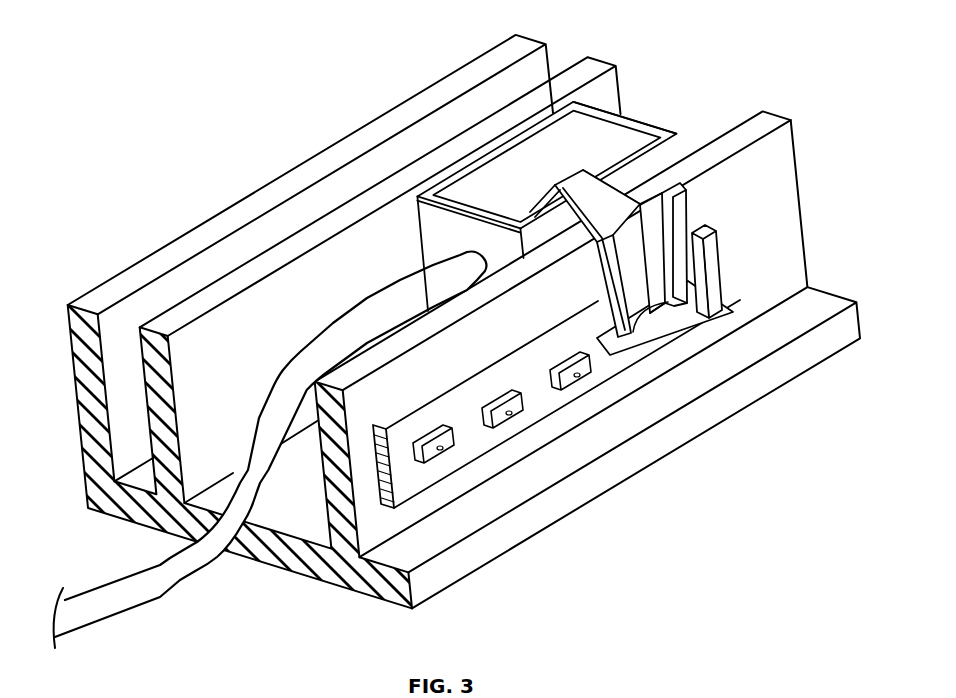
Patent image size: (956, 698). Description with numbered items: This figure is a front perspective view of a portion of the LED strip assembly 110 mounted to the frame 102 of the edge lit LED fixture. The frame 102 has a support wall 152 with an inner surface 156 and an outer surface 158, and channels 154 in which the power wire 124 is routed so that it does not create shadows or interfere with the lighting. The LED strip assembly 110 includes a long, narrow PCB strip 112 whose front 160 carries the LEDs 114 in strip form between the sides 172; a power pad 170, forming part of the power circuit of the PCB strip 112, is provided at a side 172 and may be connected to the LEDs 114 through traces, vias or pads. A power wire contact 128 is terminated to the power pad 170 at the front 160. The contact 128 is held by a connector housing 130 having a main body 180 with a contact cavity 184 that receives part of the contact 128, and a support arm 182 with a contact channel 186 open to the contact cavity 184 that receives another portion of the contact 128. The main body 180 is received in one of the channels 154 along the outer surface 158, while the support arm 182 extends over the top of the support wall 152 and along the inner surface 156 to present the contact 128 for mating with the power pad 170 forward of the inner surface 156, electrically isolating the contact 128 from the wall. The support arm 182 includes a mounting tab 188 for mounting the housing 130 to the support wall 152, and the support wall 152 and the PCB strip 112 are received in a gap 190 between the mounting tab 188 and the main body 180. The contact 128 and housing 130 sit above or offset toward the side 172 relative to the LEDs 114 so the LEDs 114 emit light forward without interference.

The frame 102 is at (460, 325).
The support wall 152 is at (451, 325).
The channel 154 is at (358, 250).
The inner surface 156 is at (778, 187).
The outer surface 158 is at (727, 135).
The power wire 124 is at (183, 578).
The front 160 is at (556, 469).
The LEDs 114 is at (578, 378).
The main body 180 is at (547, 132).
The connector housing 130 is at (555, 114).
The power wire contact 128 is at (543, 163).
The contact cavity 184 is at (580, 120).
The support arm 182 is at (677, 138).
The contact channel 186 is at (636, 178).
The mounting tab 188 is at (607, 352).
The gap 190 is at (592, 248).
The power pad 170 is at (627, 343).
The side 172 is at (722, 305).
The LED strip assembly 110 is at (708, 318).
The PCB strip 112 is at (713, 298).